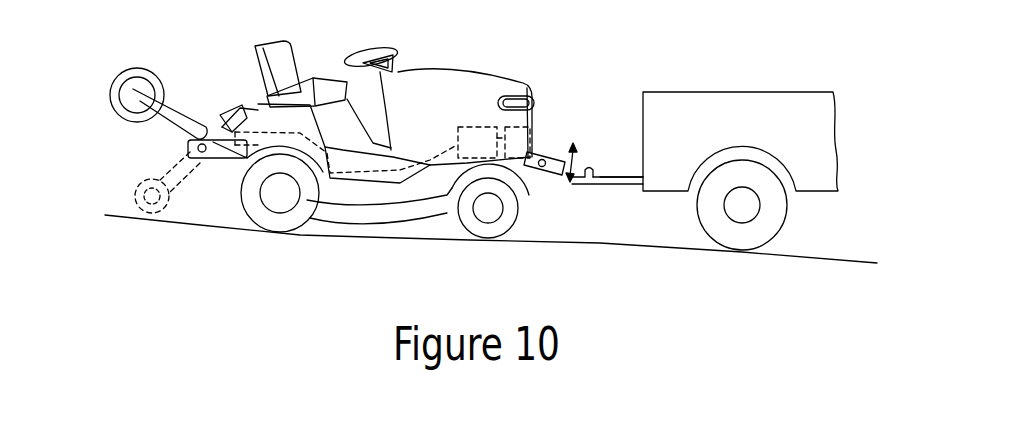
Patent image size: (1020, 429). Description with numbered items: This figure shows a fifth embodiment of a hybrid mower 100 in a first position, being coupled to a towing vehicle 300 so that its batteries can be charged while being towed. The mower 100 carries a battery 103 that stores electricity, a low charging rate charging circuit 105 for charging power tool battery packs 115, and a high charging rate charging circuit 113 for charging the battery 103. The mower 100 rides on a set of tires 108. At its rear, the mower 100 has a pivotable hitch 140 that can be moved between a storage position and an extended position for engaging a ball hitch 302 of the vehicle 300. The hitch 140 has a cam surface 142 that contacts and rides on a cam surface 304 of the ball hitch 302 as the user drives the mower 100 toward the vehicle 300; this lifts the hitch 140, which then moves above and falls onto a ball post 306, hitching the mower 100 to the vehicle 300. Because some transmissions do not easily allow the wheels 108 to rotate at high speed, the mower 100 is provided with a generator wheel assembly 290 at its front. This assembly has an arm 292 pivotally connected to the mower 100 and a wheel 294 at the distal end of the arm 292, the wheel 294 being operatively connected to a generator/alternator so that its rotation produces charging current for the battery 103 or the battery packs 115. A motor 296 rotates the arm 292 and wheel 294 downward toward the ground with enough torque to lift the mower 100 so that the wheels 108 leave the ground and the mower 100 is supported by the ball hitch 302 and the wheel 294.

The hybrid mower 100 is at (400, 72).
The battery 103 is at (472, 127).
The low charging rate charging circuit 105 is at (257, 127).
The tires 108 is at (258, 208).
The high charging rate charging circuit 113 is at (517, 127).
The power tool battery packs 115 is at (243, 108).
The pivotable hitch 140 is at (557, 155).
The cam surface 142 is at (585, 155).
The generator wheel assembly 290 is at (162, 146).
The arm 292 is at (168, 112).
The wheel 294 is at (131, 70).
The motor 296 is at (211, 133).
The vehicle 300 is at (713, 100).
The ball hitch 302 is at (604, 186).
The cam surface 304 is at (570, 183).
The ball post 306 is at (600, 173).